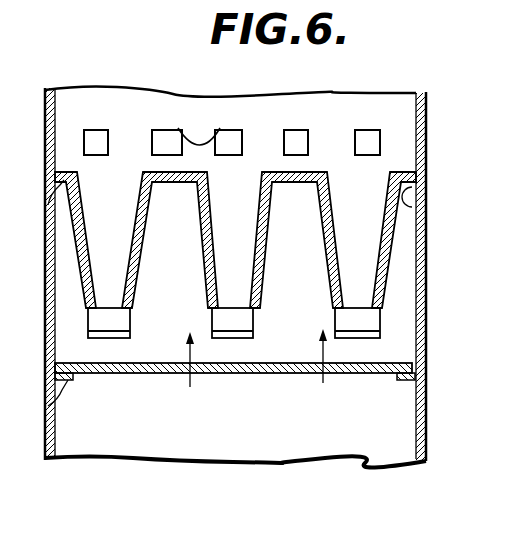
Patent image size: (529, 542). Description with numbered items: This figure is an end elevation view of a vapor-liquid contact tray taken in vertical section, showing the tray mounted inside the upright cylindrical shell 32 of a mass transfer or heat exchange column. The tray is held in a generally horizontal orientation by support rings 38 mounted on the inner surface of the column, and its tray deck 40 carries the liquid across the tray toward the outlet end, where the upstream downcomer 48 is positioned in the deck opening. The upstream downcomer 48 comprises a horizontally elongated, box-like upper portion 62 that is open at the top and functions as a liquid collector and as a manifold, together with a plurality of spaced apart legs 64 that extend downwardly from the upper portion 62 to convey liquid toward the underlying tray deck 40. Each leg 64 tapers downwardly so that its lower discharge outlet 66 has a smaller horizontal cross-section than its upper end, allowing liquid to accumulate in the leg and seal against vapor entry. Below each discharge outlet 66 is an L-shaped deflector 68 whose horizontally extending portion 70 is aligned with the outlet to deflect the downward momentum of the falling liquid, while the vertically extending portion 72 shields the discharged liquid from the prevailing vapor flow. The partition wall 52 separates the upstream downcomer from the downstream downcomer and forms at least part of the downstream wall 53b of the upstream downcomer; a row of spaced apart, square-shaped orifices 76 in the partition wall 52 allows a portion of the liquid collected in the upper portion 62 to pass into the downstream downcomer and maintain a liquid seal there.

The cylindrical shell 32 is at (426, 129).
The support rings 38 is at (48, 205).
The tray deck 40 is at (230, 48).
The upstream downcomer 48 is at (122, 146).
The partition wall 52 is at (62, 249).
The downstream wall 53b is at (129, 224).
The upper portion 62 is at (400, 149).
The legs 64 is at (190, 236).
The discharge outlets 66 is at (110, 312).
The deflector 68 is at (78, 347).
The horizontally extending portion 70 is at (268, 333).
The vertically extending portion 72 is at (112, 333).
The orifices 76 is at (180, 147).